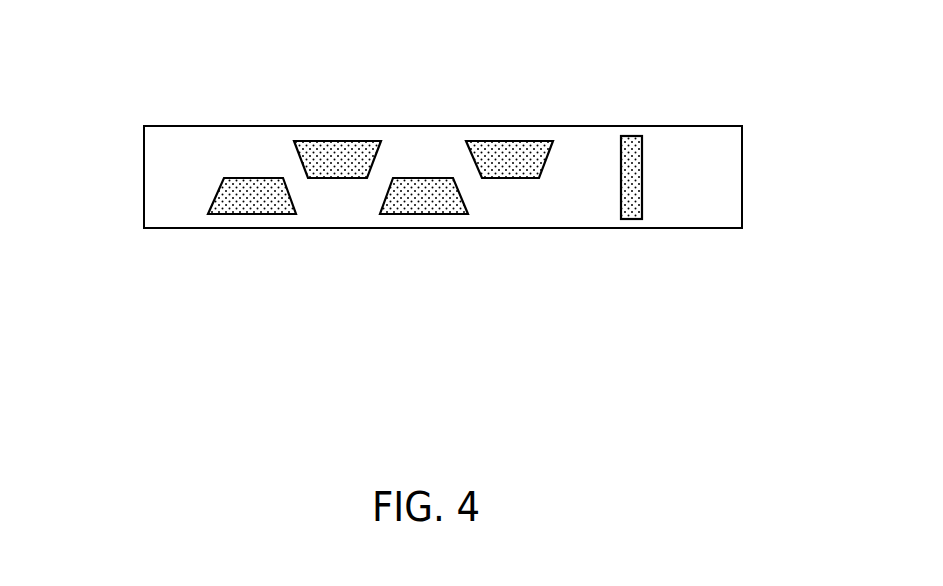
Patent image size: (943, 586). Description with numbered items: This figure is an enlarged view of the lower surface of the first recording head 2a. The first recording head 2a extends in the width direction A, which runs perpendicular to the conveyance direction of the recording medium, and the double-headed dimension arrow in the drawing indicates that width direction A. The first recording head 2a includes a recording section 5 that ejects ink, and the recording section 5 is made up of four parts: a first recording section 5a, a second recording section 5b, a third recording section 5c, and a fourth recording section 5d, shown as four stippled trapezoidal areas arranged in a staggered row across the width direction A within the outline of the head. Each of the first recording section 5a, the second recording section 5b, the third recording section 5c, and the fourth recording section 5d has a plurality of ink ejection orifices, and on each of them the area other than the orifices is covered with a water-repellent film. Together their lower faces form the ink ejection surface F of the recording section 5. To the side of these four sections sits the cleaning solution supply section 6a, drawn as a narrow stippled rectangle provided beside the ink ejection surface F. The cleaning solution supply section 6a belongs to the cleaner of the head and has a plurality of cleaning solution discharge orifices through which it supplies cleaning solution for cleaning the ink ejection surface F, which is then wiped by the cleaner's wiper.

The first recording head 2a is at (732, 97).
The ink ejection surface F is at (180, 170).
The width direction A is at (312, 85).
The recording section 5 is at (380, 242).
The first recording section 5a is at (260, 200).
The second recording section 5b is at (343, 167).
The third recording section 5c is at (418, 200).
The fourth recording section 5d is at (509, 215).
The cleaning solution supply section 6a is at (632, 210).